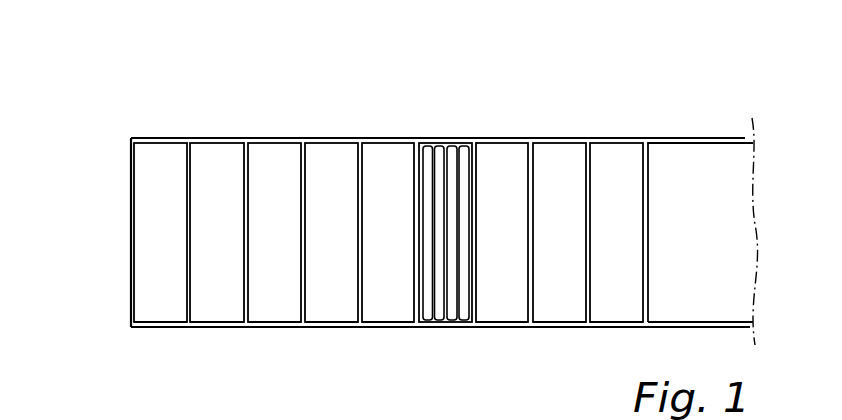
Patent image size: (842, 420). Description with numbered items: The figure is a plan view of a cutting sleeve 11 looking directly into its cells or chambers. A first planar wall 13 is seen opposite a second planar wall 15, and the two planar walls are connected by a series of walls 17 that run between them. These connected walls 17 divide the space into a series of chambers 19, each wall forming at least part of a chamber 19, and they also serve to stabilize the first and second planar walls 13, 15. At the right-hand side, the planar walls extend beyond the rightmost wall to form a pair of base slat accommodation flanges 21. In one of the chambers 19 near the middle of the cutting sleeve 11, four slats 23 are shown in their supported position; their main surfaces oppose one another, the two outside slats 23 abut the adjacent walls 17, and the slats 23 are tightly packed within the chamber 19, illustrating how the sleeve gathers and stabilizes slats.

The cutting sleeve 11 is at (166, 112).
The first planar wall 13 is at (146, 139).
The second planar wall 15 is at (155, 328).
The walls 17 is at (192, 165).
The chambers 19 is at (155, 302).
The base slat accommodation flanges 21 is at (697, 143).
The slats 23 is at (468, 323).